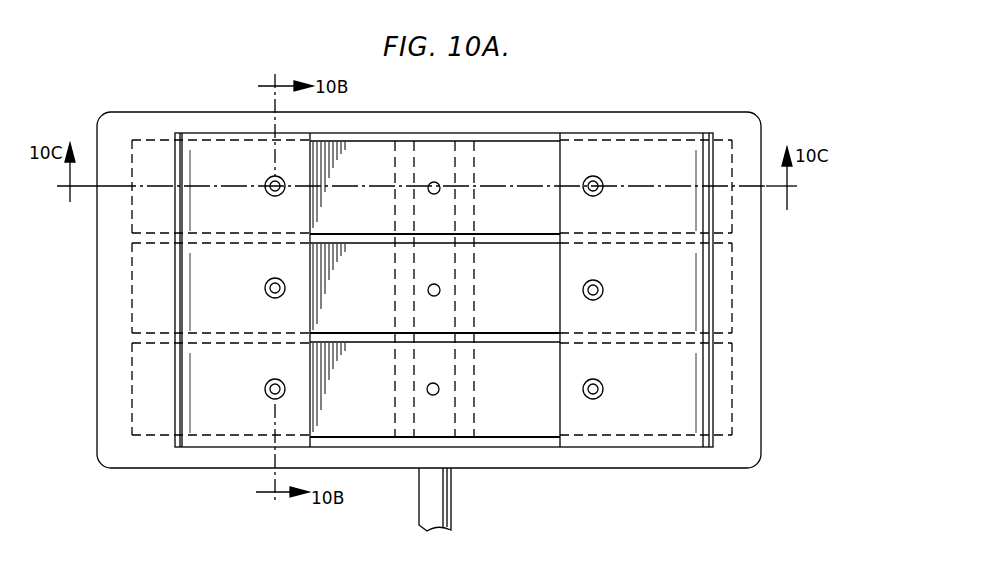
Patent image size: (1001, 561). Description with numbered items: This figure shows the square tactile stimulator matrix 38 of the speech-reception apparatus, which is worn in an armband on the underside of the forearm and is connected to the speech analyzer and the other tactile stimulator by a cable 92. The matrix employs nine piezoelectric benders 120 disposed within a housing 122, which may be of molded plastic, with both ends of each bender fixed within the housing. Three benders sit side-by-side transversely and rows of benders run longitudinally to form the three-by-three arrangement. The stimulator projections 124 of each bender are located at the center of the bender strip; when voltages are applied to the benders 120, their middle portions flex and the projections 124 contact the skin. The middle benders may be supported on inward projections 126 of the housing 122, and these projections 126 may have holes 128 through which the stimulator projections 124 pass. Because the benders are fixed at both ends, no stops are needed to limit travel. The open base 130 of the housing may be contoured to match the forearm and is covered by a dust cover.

The tactile stimulator matrix 38 is at (636, 101).
The cable 92 is at (452, 498).
The piezoelectric benders 120 is at (533, 148).
The housing 122 is at (650, 470).
The stimulator projections 124 is at (268, 178).
The inward projections 126 is at (313, 428).
The holes 128 is at (268, 194).
The base 130 is at (748, 326).